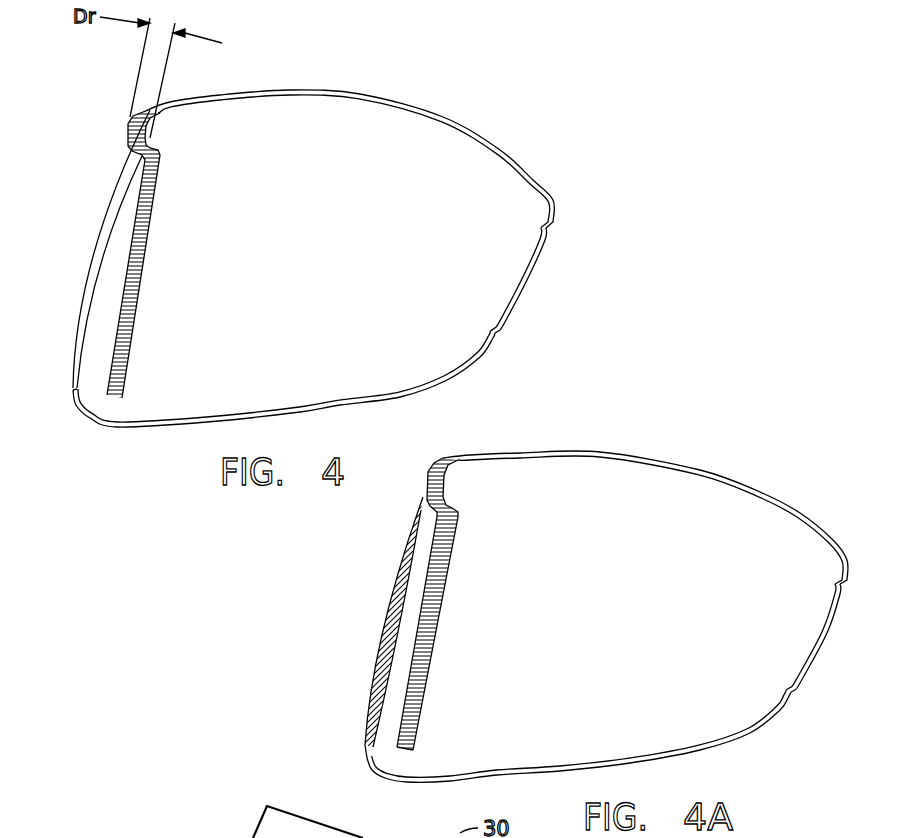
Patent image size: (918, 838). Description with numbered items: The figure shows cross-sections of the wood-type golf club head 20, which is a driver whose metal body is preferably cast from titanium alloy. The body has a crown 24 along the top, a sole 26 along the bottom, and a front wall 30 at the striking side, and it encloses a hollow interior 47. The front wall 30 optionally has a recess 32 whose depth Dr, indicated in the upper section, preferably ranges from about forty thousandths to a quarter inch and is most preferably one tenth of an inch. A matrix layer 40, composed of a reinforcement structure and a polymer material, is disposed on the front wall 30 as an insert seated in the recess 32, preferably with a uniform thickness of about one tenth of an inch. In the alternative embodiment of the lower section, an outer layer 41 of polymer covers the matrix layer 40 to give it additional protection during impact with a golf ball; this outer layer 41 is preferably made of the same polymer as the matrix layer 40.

In FIG. 4, the golf club head 20 is at (516, 84).
In FIG. 4A, the golf club head 20 is at (778, 440).
In FIG. 4, the crown 24 is at (328, 92).
In FIG. 4A, the crown 24 is at (593, 443).
In FIG. 4, the sole 26 is at (460, 377).
In FIG. 4A, the sole 26 is at (763, 728).
In FIG. 4, the front wall 30 is at (152, 250).
In FIG. 4A, the front wall 30 is at (445, 598).
In FIG. 4, the recess 32 is at (77, 397).
In FIG. 4, the matrix layer 40 is at (98, 234).
In FIG. 4A, the matrix layer 40 is at (417, 560).
In FIG. 4A, the outer layer 41 is at (365, 712).
In FIG. 4, the hollow interior 47 is at (308, 228).
In FIG. 4A, the hollow interior 47 is at (619, 624).